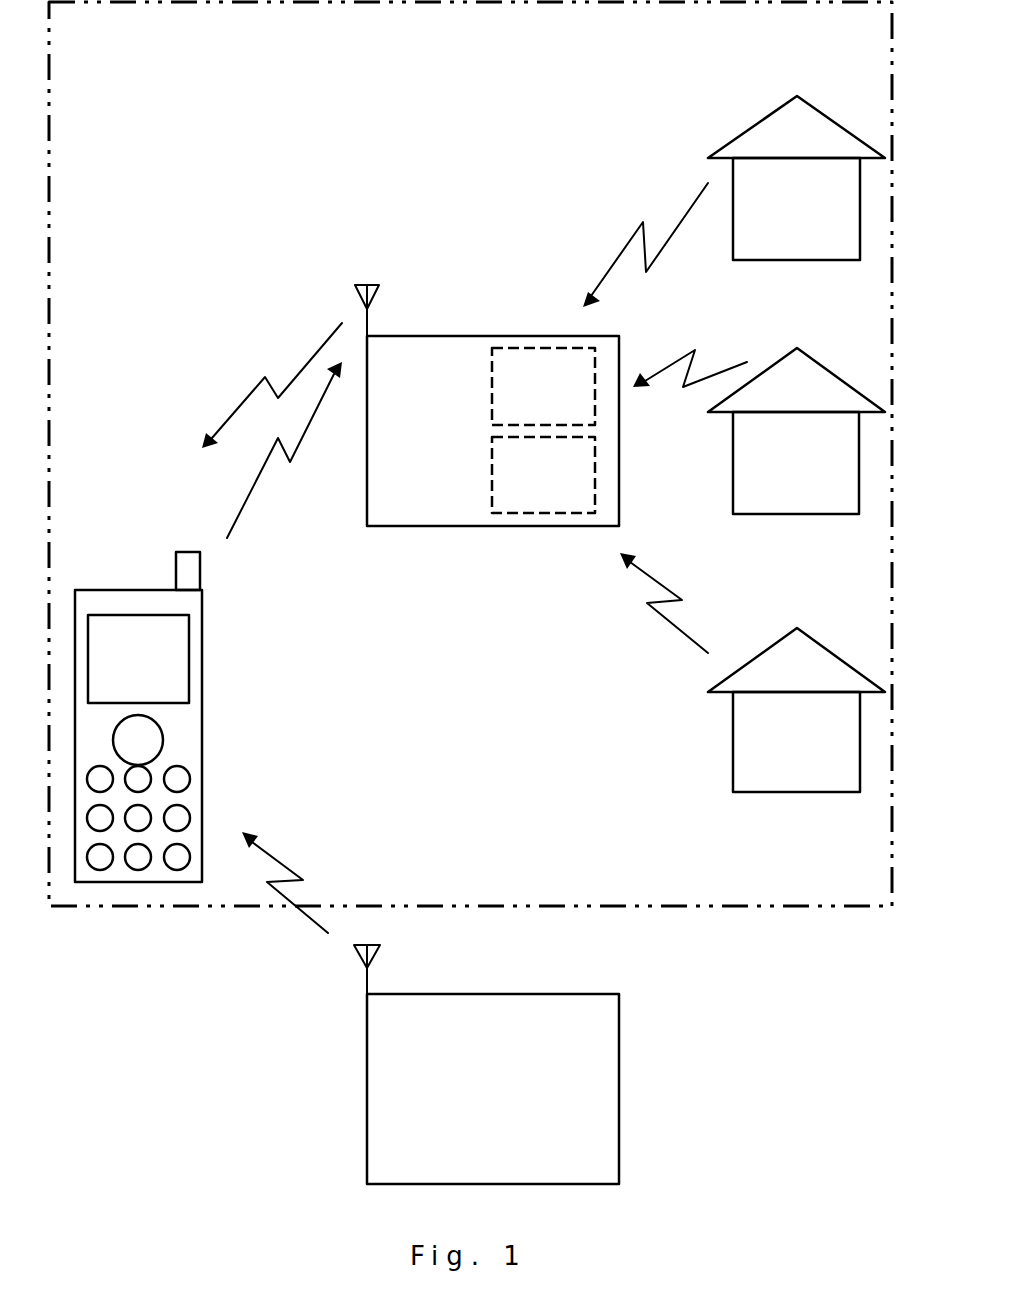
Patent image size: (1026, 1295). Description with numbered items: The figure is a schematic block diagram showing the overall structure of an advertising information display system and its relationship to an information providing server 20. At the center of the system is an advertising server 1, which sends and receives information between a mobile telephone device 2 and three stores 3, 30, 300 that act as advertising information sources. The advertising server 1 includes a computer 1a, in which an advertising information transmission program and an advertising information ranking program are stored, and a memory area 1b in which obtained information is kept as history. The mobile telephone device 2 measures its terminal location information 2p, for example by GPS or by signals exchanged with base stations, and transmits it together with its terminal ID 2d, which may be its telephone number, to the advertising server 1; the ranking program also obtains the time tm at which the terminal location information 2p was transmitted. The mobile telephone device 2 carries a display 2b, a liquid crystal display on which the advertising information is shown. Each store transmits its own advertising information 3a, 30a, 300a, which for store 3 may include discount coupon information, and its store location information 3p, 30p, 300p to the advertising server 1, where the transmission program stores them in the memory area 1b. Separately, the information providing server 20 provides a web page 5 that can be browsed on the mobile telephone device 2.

The advertising server 1 is at (438, 492).
The computer 1a is at (525, 475).
The memory area 1b is at (548, 365).
The mobile telephone device 2 is at (183, 740).
The display 2b is at (183, 652).
The terminal location information 2p is at (274, 433).
The terminal ID 2d is at (274, 433).
The terminal location information transmission time tm is at (238, 400).
The store 3 is at (783, 137).
The advertising information 3a is at (642, 221).
The store location information 3p is at (623, 247).
The store 30 is at (787, 477).
The advertising information 30a is at (707, 340).
The store location information 30p is at (660, 363).
The store 300 is at (787, 762).
The advertising information 300a is at (621, 640).
The store location information 300p is at (657, 622).
The web page 5 is at (285, 897).
The information providing server 20 is at (380, 1097).